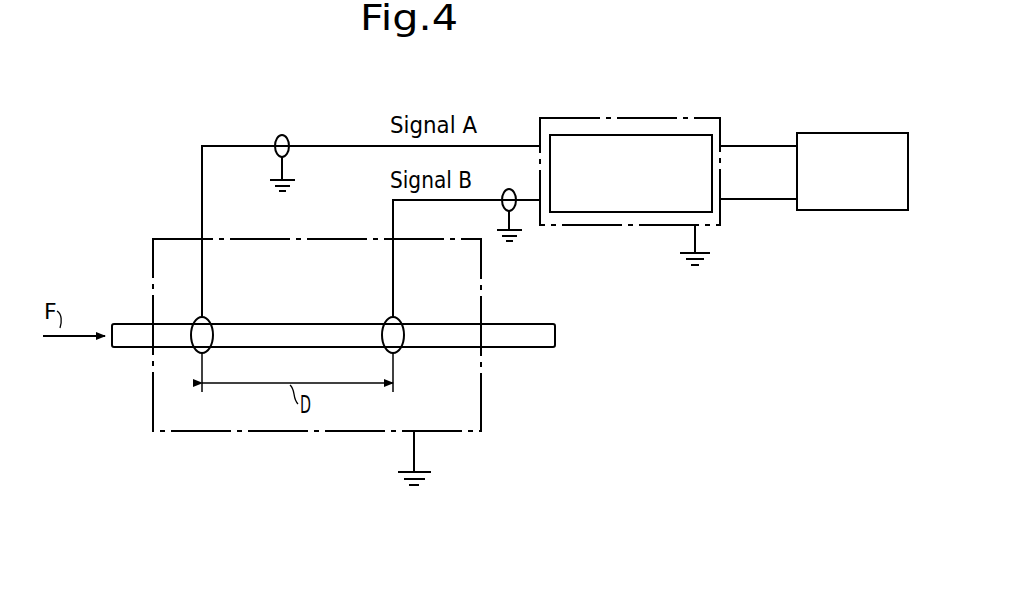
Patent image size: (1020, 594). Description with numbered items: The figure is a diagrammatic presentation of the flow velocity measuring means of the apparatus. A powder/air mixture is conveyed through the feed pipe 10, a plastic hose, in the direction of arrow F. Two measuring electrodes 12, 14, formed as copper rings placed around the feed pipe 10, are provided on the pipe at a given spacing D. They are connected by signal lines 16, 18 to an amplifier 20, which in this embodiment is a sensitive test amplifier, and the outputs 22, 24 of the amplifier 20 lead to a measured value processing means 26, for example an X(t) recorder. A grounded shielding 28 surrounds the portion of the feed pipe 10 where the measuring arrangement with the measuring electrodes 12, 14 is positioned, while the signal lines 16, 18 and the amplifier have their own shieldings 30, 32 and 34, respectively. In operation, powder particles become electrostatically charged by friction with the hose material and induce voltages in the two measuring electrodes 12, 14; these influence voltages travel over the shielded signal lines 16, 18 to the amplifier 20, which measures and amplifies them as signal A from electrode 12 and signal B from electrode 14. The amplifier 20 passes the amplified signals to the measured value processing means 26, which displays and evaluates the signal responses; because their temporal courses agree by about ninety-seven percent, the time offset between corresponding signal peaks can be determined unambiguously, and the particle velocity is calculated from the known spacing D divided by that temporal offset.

The feed pipe 10 is at (133, 338).
The measuring electrode 12 is at (190, 330).
The measuring electrode 14 is at (382, 328).
The signal line 16 is at (202, 180).
The signal line 18 is at (392, 217).
The amplifier 20 is at (635, 150).
The amplifier output 22 is at (755, 143).
The amplifier output 24 is at (755, 201).
The measured value processing means 26 is at (864, 193).
The grounded shielding 28 is at (484, 404).
The shielding 30 is at (278, 135).
The shielding 32 is at (506, 166).
The shielding 34 is at (620, 227).